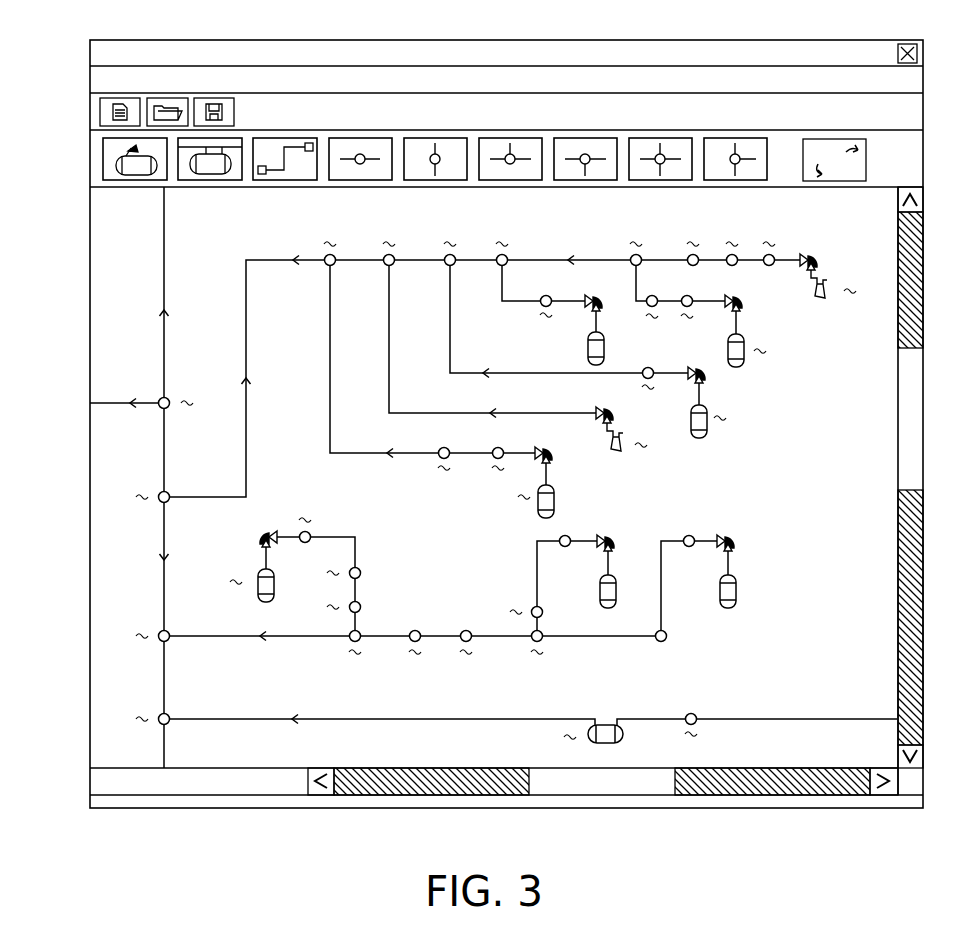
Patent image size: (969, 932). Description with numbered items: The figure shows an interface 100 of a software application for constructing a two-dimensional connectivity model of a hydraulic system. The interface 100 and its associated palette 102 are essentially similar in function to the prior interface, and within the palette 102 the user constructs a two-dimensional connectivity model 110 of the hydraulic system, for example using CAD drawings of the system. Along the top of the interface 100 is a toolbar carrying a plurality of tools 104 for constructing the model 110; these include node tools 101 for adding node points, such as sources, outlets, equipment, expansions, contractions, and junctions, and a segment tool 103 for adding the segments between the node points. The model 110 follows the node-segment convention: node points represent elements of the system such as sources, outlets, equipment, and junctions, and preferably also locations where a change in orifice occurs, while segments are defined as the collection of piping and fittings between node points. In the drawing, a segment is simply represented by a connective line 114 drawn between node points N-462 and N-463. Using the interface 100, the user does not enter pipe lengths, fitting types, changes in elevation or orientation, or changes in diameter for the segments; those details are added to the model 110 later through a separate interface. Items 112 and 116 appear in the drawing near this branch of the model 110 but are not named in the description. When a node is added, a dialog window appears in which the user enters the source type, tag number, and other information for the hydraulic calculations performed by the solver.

The interface 100 is at (90, 42).
The node tools 101 is at (770, 190).
The palette 102 is at (120, 318).
The segment tool 103 is at (278, 182).
The tools 104 is at (96, 158).
The 2-D connectivity model 110 is at (754, 631).
The vessel 112 is at (739, 589).
The connective line 114 is at (674, 538).
The pump 116 is at (738, 544).
The node point N-462 is at (689, 535).
The node point N-463 is at (661, 643).